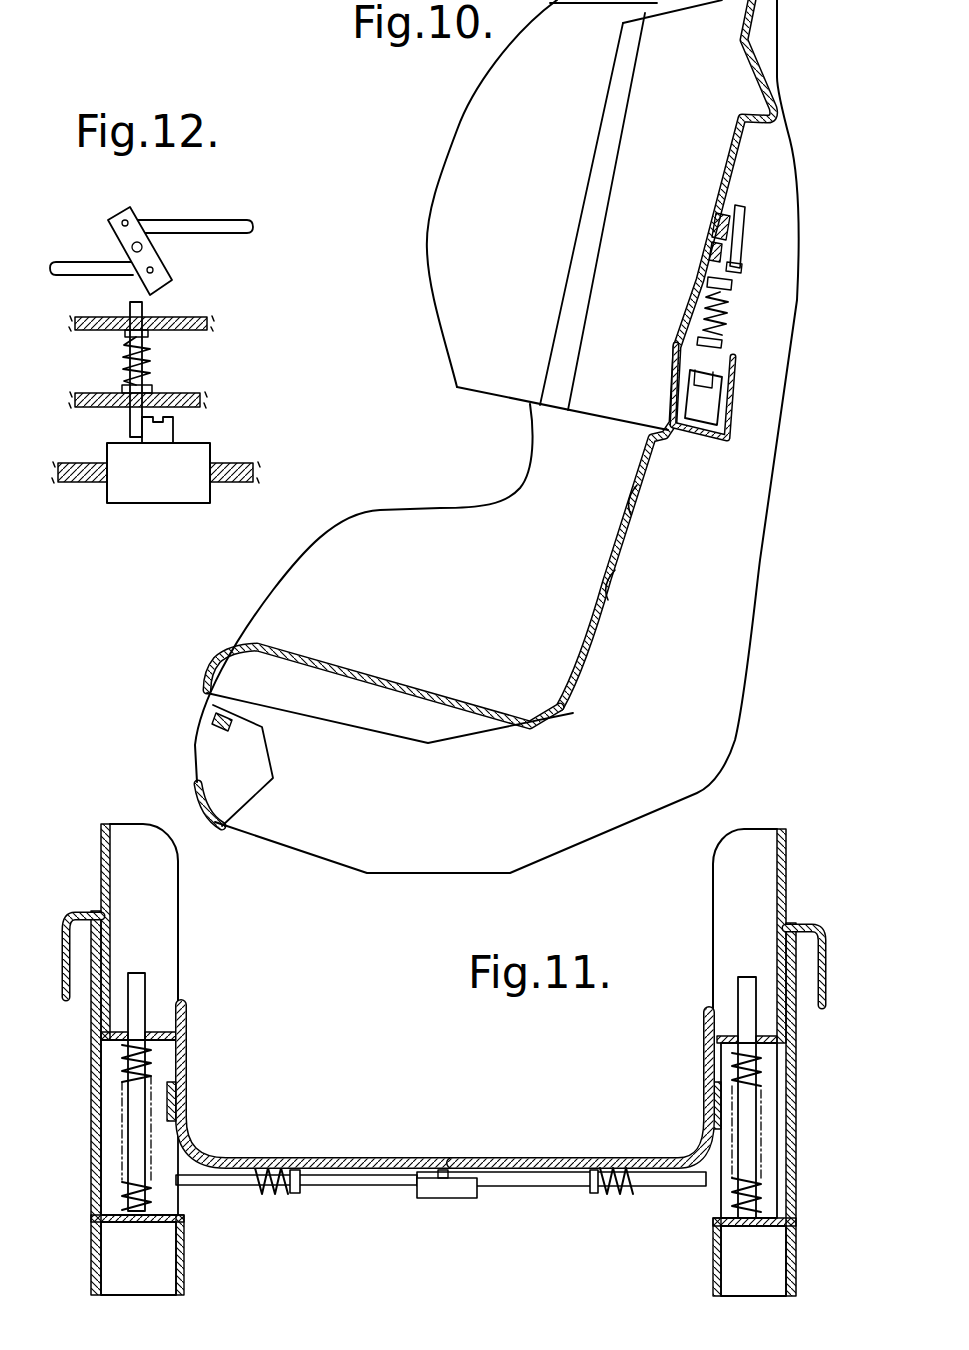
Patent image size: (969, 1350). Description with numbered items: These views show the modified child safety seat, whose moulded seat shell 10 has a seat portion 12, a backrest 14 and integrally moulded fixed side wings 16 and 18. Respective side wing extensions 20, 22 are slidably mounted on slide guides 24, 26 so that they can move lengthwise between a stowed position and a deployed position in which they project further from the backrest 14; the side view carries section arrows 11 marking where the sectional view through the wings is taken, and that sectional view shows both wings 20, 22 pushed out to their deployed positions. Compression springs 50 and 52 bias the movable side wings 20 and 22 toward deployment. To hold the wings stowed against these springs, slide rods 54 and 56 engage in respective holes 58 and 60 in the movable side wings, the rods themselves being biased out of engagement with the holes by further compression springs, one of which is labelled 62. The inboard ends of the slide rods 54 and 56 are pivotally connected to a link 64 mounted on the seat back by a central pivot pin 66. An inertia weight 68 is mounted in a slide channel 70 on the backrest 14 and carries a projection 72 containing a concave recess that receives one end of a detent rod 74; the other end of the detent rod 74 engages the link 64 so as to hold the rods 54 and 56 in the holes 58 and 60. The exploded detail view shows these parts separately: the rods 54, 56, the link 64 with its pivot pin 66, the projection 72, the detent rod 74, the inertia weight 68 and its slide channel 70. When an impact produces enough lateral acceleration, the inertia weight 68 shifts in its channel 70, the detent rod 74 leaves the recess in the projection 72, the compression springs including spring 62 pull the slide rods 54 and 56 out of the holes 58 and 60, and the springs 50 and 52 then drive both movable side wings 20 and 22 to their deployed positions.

In FIG. 10, the seat shell 10 is at (268, 581).
In FIG. 11, the seat shell 10 is at (330, 960).
In FIG. 10, the section line 11 is at (420, 157).
In FIG. 10, the seat portion 12 is at (270, 650).
In FIG. 10, the backrest 14 is at (623, 548).
In FIG. 10, the fixed side wing 16 is at (607, 398).
In FIG. 11, the fixed side wing 16 is at (707, 1047).
In FIG. 11, the fixed side wing 18 is at (186, 1049).
In FIG. 10, the side wing extension 20 is at (430, 249).
In FIG. 11, the side wing extension 20 is at (725, 931).
In FIG. 11, the side wing extension 22 is at (159, 919).
In FIG. 11, the slide guide 24 is at (744, 993).
In FIG. 11, the slide guide 26 is at (139, 993).
In FIG. 11, the compression spring 50 is at (760, 1071).
In FIG. 11, the compression spring 52 is at (120, 1063).
In FIG. 10, the slide rod 54 is at (727, 217).
In FIG. 12, the slide rod 54 is at (226, 222).
In FIG. 11, the slide rod 54 is at (560, 1184).
In FIG. 10, the slide rod 56 is at (712, 247).
In FIG. 12, the slide rod 56 is at (73, 272).
In FIG. 11, the slide rod 56 is at (343, 1183).
In FIG. 11, the hole 58 is at (717, 1094).
In FIG. 11, the hole 60 is at (178, 1090).
In FIG. 11, the compression spring 62 is at (276, 1195).
In FIG. 10, the link 64 is at (733, 268).
In FIG. 12, the link 64 is at (108, 219).
In FIG. 10, the central pivot pin 66 is at (741, 228).
In FIG. 12, the central pivot pin 66 is at (153, 238).
In FIG. 11, the central pivot pin 66 is at (443, 1198).
In FIG. 10, the inertia weight 68 is at (700, 387).
In FIG. 12, the inertia weight 68 is at (142, 487).
In FIG. 10, the slide channel 70 is at (722, 420).
In FIG. 12, the slide channel 70 is at (90, 470).
In FIG. 10, the projection 72 is at (710, 280).
In FIG. 12, the projection 72 is at (143, 310).
In FIG. 10, the detent rod 74 is at (725, 312).
In FIG. 12, the detent rod 74 is at (153, 370).